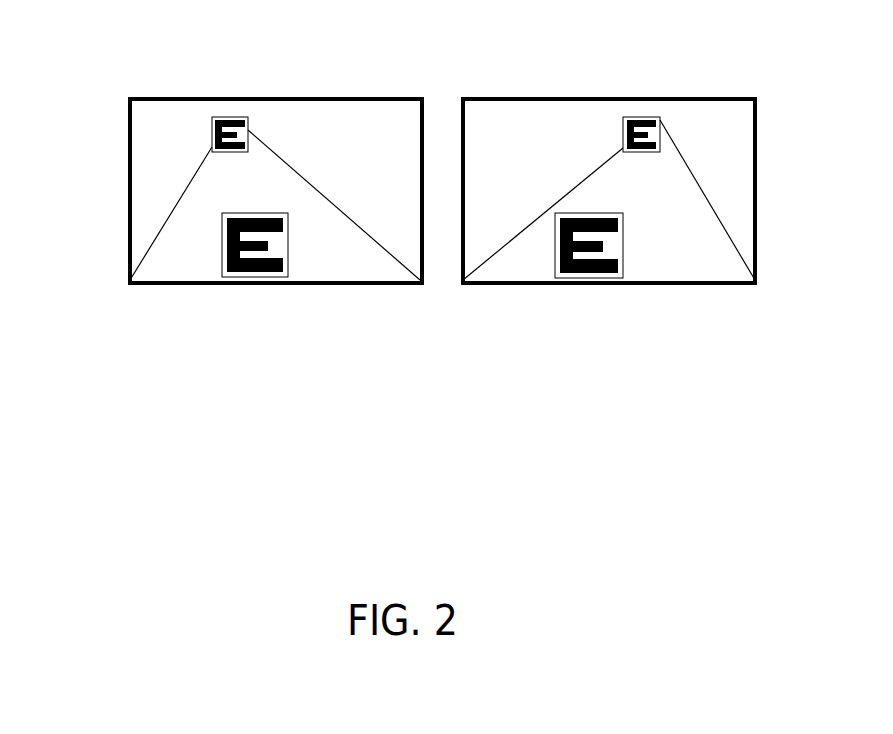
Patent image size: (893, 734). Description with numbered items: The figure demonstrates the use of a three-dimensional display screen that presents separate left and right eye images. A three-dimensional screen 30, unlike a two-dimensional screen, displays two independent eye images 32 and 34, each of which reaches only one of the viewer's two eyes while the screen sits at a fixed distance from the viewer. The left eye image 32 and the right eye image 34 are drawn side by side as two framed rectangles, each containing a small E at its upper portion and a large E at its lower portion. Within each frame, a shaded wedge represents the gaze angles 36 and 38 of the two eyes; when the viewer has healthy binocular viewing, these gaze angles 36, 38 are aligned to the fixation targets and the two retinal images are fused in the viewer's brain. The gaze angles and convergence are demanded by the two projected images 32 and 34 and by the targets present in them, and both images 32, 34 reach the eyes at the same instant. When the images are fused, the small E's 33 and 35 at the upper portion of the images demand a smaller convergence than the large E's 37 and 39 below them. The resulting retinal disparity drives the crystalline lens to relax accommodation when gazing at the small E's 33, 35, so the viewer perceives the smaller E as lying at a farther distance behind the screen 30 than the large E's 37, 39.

The three-dimensional screen 30 is at (432, 376).
The left eye image 32 is at (130, 103).
The small E target in left eye image 33 is at (212, 122).
The right eye image 34 is at (757, 102).
The small E target in right eye image 35 is at (657, 118).
The gaze angle of one eye 36 is at (227, 177).
The large E target in left eye image 37 is at (225, 275).
The gaze angle of the other eye 38 is at (660, 192).
The large E target in right eye image 39 is at (607, 275).